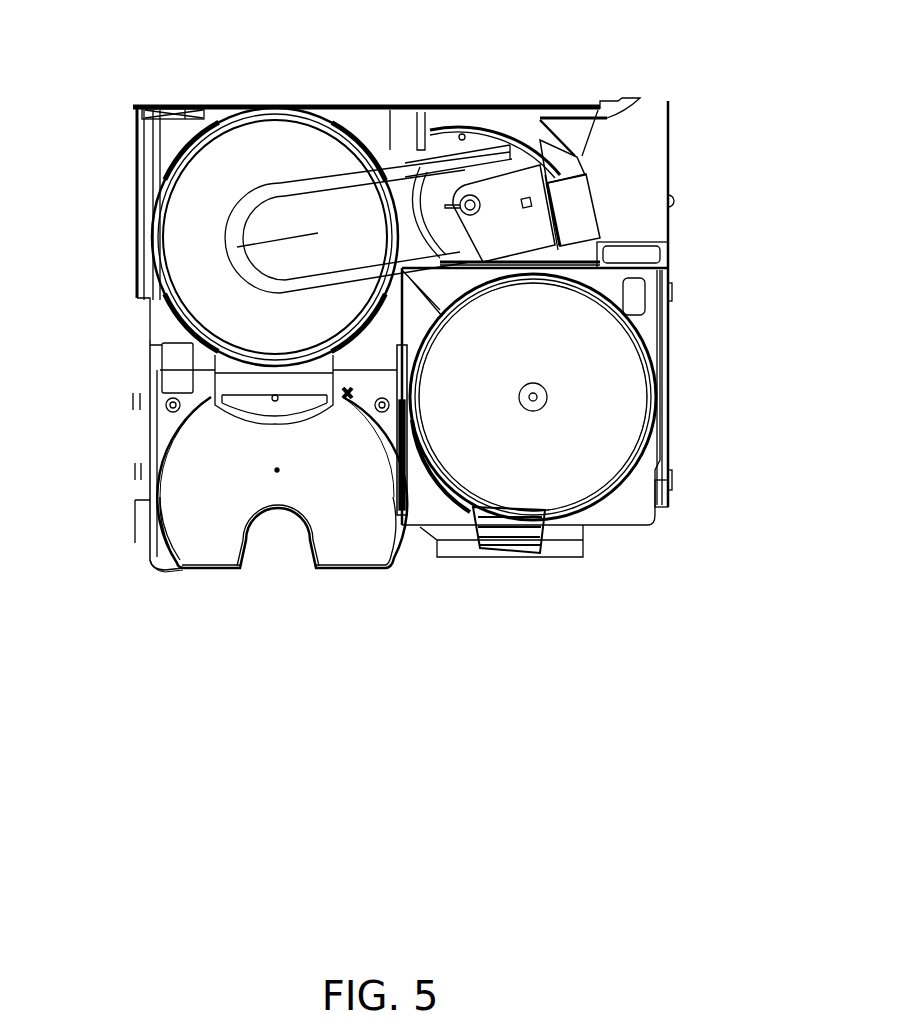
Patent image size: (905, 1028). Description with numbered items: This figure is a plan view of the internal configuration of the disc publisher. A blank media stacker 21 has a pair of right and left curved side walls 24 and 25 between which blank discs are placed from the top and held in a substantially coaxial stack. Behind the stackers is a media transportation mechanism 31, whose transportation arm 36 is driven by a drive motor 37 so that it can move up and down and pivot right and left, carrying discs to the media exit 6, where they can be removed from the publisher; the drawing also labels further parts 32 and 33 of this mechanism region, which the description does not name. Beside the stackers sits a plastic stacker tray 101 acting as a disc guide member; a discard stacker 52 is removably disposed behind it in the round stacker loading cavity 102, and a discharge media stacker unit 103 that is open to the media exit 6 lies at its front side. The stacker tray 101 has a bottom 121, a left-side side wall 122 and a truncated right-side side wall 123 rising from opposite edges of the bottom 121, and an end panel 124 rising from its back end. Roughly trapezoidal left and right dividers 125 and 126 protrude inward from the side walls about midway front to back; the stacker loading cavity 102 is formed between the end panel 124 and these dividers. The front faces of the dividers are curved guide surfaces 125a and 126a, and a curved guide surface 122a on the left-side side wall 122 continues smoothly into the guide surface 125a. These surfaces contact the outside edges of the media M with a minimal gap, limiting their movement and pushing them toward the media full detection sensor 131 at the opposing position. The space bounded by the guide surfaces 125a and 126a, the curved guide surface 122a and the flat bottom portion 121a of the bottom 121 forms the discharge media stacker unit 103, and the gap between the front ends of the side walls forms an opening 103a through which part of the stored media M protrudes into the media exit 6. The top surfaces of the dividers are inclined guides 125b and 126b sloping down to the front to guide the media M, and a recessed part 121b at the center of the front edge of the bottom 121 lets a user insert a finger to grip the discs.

The discard stacker 52 is at (310, 110).
The transportation arm 36 is at (335, 208).
The end panel 124 is at (380, 117).
The media transportation mechanism 31 is at (495, 130).
The cover arc 33 is at (510, 185).
The drive motor 37 is at (575, 185).
The pressing block 32 is at (558, 235).
The blank media stacker 21 is at (660, 322).
The media M is at (175, 253).
The curved side wall 24 is at (653, 410).
The stacker loading cavity 102 is at (155, 192).
The stacker tray 101 is at (140, 361).
The inclined guide 125b is at (168, 418).
The left-side side wall 122 is at (148, 448).
The discharge media stacker unit 103 is at (168, 516).
The curved guide surface 122a is at (180, 560).
The left divider 125 is at (215, 412).
The right divider 126 is at (333, 420).
The media full detection sensor 131 is at (346, 398).
The curved guide surface 125a is at (187, 427).
The curved guide surface 126a is at (378, 445).
The inclined guide 126b is at (410, 407).
The right-side side wall 123 is at (417, 477).
The curved side wall 25 is at (465, 512).
The opening 103a is at (402, 517).
The bottom 121 is at (393, 572).
The flat bottom portion 121a is at (347, 552).
The recessed part 121b is at (308, 550).
The media exit 6 is at (199, 583).